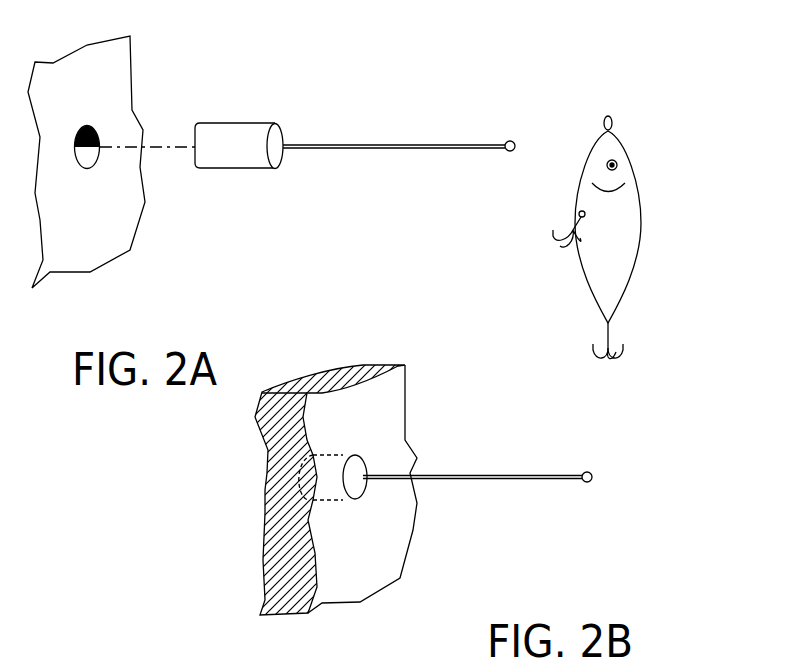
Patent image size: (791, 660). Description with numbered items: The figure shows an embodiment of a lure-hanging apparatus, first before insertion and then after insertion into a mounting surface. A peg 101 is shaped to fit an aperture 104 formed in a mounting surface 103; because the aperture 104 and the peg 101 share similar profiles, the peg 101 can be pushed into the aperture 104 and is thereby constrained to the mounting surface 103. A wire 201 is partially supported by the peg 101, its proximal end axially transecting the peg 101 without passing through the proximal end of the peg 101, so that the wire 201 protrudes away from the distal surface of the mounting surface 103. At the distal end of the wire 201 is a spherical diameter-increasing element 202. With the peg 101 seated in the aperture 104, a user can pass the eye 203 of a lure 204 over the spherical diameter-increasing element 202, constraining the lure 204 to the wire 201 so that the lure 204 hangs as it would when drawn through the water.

In FIG. 2A, the peg 101 is at (258, 122).
In FIG. 2B, the peg 101 is at (328, 500).
In FIG. 2A, the mounting surface 103 is at (118, 59).
In FIG. 2B, the mounting surface 103 is at (391, 390).
In FIG. 2A, the aperture 104 is at (100, 130).
In FIG. 2B, the aperture 104 is at (360, 455).
In FIG. 2A, the wire 201 is at (395, 144).
In FIG. 2B, the wire 201 is at (487, 473).
In FIG. 2A, the spherical diameter-increasing element 202 is at (497, 143).
In FIG. 2B, the spherical diameter-increasing element 202 is at (593, 472).
In FIG. 2A, the eye 203 is at (612, 120).
In FIG. 2A, the lure 204 is at (673, 200).